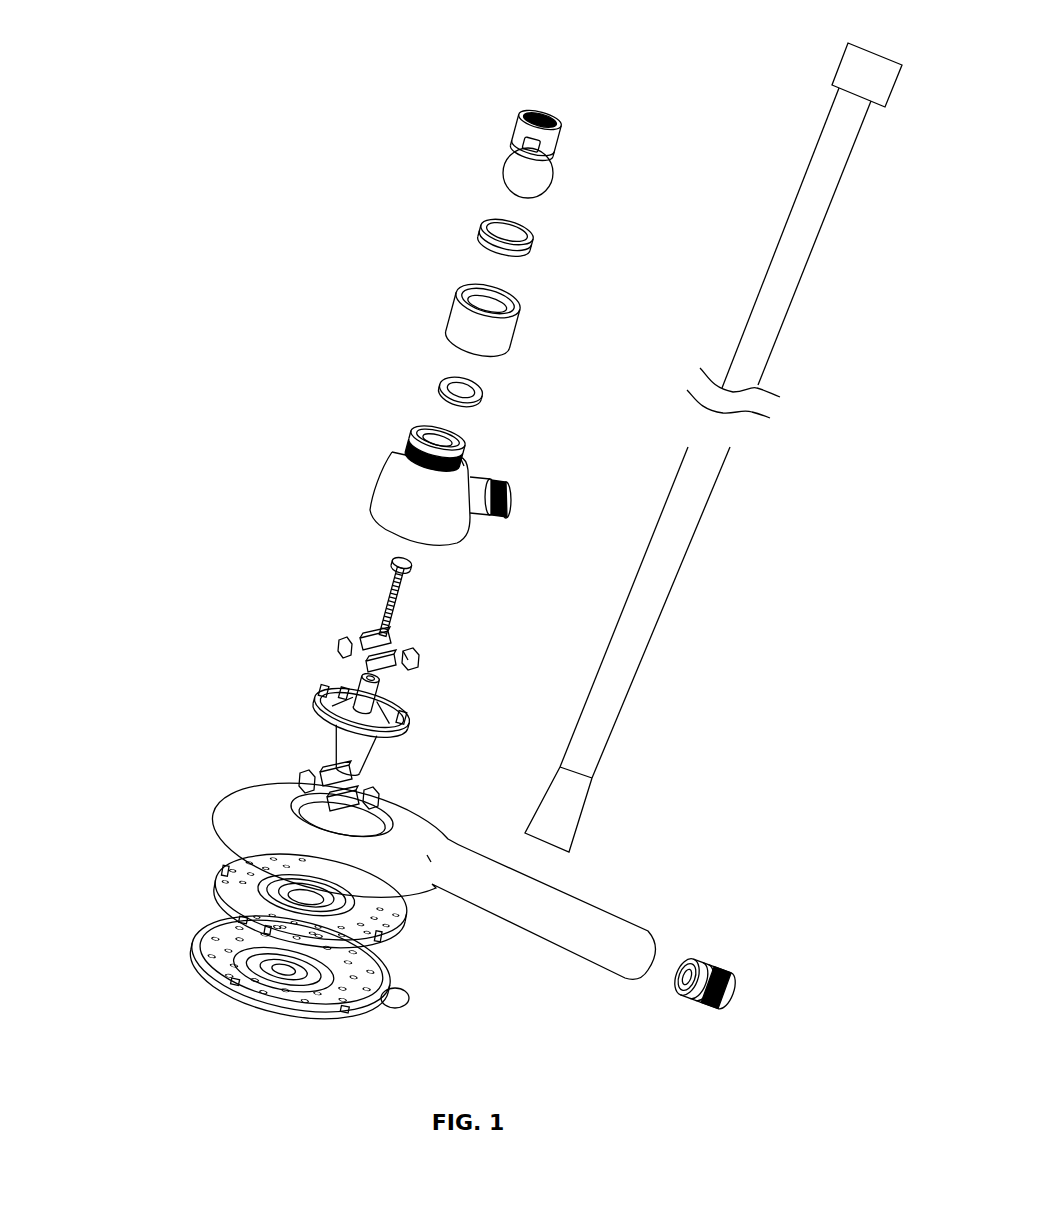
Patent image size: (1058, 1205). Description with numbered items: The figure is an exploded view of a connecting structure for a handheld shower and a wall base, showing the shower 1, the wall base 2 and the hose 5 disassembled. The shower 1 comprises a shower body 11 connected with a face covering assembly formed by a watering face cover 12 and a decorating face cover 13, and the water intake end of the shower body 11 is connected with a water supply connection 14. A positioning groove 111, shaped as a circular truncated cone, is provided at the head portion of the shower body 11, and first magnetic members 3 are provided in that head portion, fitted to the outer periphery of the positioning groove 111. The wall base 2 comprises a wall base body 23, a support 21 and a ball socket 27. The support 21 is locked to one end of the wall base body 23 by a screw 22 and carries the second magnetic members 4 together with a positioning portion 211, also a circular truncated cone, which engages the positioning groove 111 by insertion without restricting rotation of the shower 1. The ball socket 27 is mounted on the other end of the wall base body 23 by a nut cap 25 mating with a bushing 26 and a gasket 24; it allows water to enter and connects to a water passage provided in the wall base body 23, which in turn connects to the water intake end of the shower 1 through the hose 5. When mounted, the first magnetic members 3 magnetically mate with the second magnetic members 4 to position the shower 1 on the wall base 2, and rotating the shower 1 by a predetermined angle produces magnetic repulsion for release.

The shower 1 is at (349, 891).
The shower body 11 is at (233, 818).
The positioning groove 111 is at (340, 823).
The watering face cover 12 is at (220, 868).
The decorating face cover 13 is at (198, 942).
The water supply connection 14 is at (727, 967).
The wall base 2 is at (370, 431).
The support 21 is at (327, 700).
The positioning portion 211 is at (357, 748).
The screw 22 is at (383, 580).
The wall base body 23 is at (402, 485).
The gasket 24 is at (436, 384).
The nut cap 25 is at (448, 310).
The bushing 26 is at (485, 227).
The ball socket 27 is at (515, 148).
The first magnetic members 3 is at (300, 774).
The second magnetic members 4 is at (418, 656).
The hose 5 is at (623, 667).